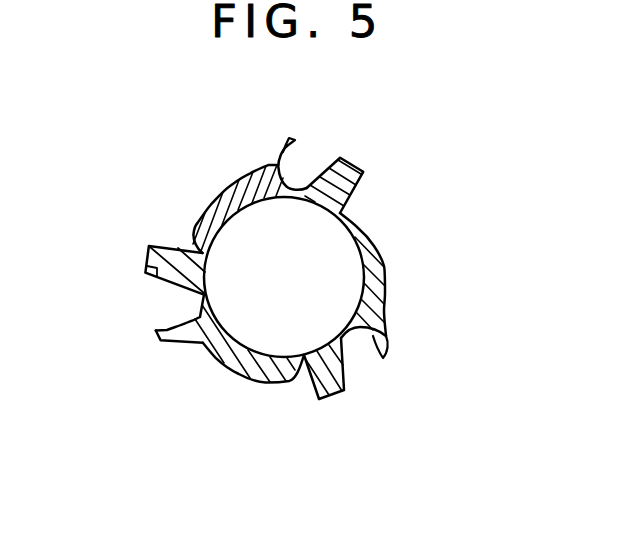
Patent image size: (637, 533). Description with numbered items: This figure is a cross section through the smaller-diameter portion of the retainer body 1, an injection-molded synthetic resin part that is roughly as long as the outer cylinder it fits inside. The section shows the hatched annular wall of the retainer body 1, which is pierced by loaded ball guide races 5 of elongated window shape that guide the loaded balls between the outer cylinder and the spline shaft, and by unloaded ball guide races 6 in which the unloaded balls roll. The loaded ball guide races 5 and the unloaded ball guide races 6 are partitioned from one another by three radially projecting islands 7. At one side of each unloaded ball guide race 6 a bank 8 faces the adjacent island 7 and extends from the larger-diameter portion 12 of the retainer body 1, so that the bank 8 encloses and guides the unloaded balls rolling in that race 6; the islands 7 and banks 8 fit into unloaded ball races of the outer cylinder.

The retainer body 1 is at (372, 142).
The loaded ball guide races 5 is at (190, 232).
The unloaded ball guide races 6 is at (306, 189).
The islands 7 is at (360, 170).
The banks 8 is at (281, 158).
The larger-diameter portion 12 is at (387, 262).